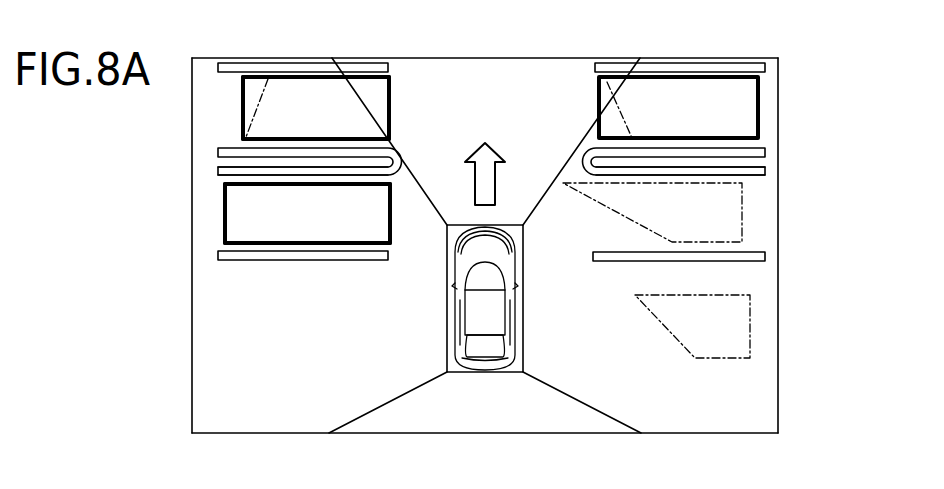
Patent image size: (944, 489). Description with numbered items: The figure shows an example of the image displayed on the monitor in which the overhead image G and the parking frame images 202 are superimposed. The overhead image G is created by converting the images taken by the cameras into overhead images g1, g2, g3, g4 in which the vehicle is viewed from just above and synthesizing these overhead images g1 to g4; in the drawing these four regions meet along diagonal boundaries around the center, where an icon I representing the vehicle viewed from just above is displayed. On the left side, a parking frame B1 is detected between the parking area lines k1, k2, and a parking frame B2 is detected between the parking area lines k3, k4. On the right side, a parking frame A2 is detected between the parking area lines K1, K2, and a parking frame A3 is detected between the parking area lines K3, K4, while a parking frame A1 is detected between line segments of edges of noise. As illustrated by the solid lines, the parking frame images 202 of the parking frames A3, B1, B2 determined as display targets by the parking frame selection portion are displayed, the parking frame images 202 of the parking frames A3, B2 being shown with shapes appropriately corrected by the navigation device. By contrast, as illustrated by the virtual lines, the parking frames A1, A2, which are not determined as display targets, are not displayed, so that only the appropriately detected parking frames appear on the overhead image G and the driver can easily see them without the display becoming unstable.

The overhead image G is at (543, 105).
The overhead image g1 is at (485, 97).
The overhead image g2 is at (445, 400).
The overhead image g3 is at (227, 350).
The overhead image g4 is at (738, 387).
The icon I is at (447, 318).
The parking area line k1 is at (275, 262).
The parking area line k2 is at (335, 173).
The parking area line k3 is at (337, 148).
The parking area line k4 is at (388, 66).
The parking area line K1 is at (766, 255).
The parking area line K2 is at (766, 171).
The parking area line K3 is at (766, 151).
The parking area line K4 is at (765, 66).
The parking frame B1 is at (223, 196).
The parking frame B2 is at (242, 92).
The parking frame A1 is at (751, 333).
The parking frame A2 is at (743, 218).
The parking frame A3 is at (760, 108).
The parking frame image 202 is at (242, 108).